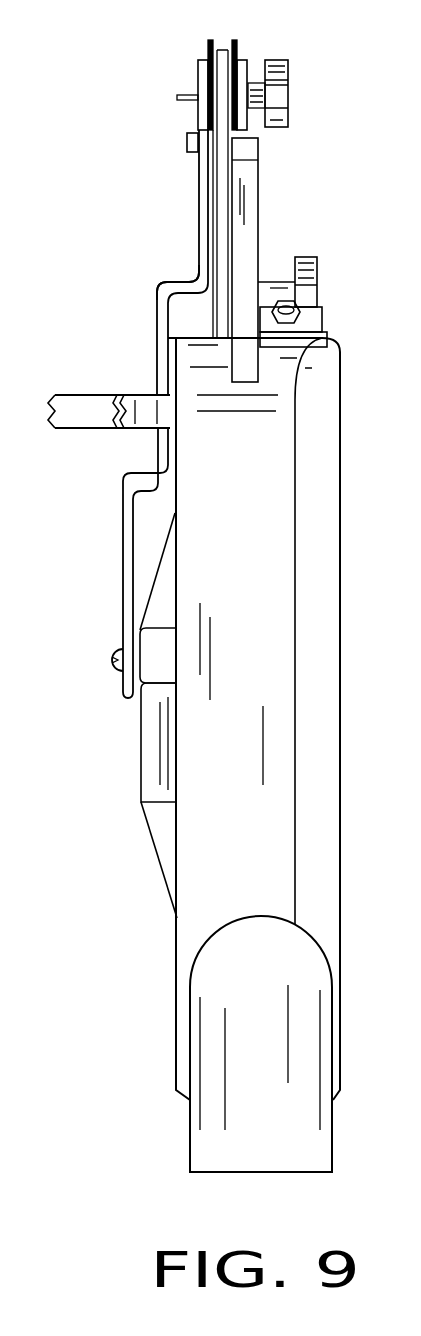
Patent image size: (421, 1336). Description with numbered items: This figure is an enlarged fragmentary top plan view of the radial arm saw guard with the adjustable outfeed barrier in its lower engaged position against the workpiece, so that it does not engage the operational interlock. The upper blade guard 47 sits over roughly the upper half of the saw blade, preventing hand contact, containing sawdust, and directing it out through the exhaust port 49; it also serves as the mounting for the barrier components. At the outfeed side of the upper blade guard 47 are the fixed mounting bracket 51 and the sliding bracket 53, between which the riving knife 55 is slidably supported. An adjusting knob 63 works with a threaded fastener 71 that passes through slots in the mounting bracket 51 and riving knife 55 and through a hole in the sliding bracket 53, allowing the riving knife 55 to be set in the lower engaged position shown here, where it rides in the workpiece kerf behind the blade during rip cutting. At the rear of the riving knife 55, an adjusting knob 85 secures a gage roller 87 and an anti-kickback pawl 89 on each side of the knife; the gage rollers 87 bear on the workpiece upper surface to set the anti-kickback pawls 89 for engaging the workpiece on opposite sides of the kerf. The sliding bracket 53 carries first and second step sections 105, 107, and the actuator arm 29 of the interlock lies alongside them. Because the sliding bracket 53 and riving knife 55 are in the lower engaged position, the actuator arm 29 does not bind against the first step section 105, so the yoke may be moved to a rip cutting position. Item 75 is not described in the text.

The actuator arm 29 is at (90, 412).
The upper blade guard 47 is at (213, 893).
The exhaust port 49 is at (265, 1118).
The fixed mounting bracket 51 is at (252, 198).
The sliding bracket 53 is at (157, 305).
The riving knife 55 is at (234, 159).
The adjusting knob 63 is at (306, 258).
The threaded fastener 71 is at (189, 134).
The screw 75 is at (110, 662).
The adjusting knob 85 is at (288, 72).
The gage roller 87 is at (199, 62).
The anti-kickback pawl 89 is at (210, 42).
The first step section 105 is at (160, 344).
The second step section 107 is at (205, 235).